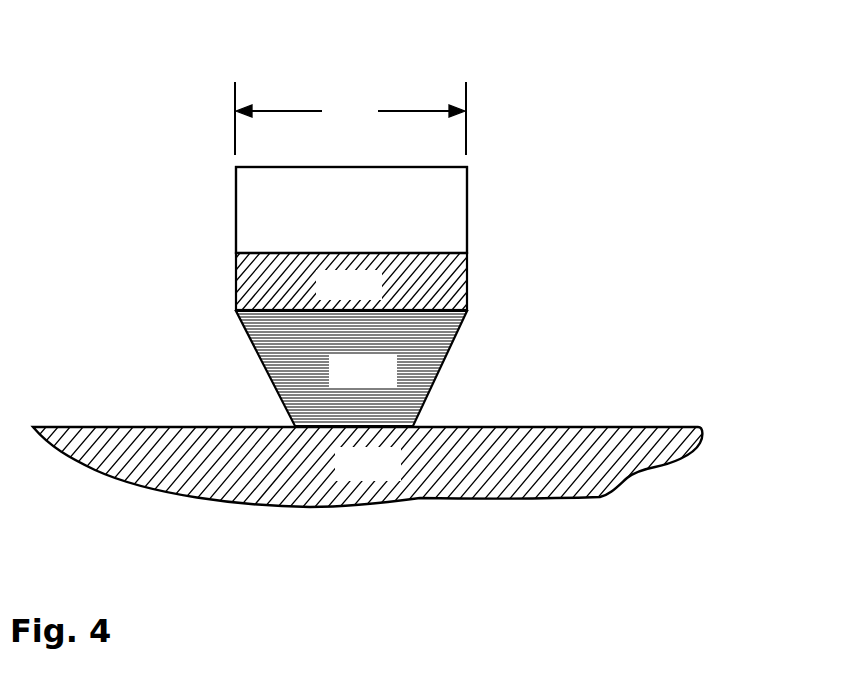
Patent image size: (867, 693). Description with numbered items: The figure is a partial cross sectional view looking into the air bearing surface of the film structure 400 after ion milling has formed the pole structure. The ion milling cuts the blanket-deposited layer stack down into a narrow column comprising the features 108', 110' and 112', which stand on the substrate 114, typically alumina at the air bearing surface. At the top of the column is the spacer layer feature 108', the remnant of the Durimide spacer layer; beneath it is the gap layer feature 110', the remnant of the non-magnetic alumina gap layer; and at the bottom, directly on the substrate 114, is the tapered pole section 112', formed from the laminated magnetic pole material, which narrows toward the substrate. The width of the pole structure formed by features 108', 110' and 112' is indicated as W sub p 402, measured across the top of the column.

The film structure 400 is at (582, 208).
The pole structure width Wp 402 is at (370, 93).
The spacer layer feature 108' is at (351, 210).
The gap layer feature 110' is at (351, 281).
The tapered pole section 112' is at (351, 368).
The substrate 114 is at (339, 478).